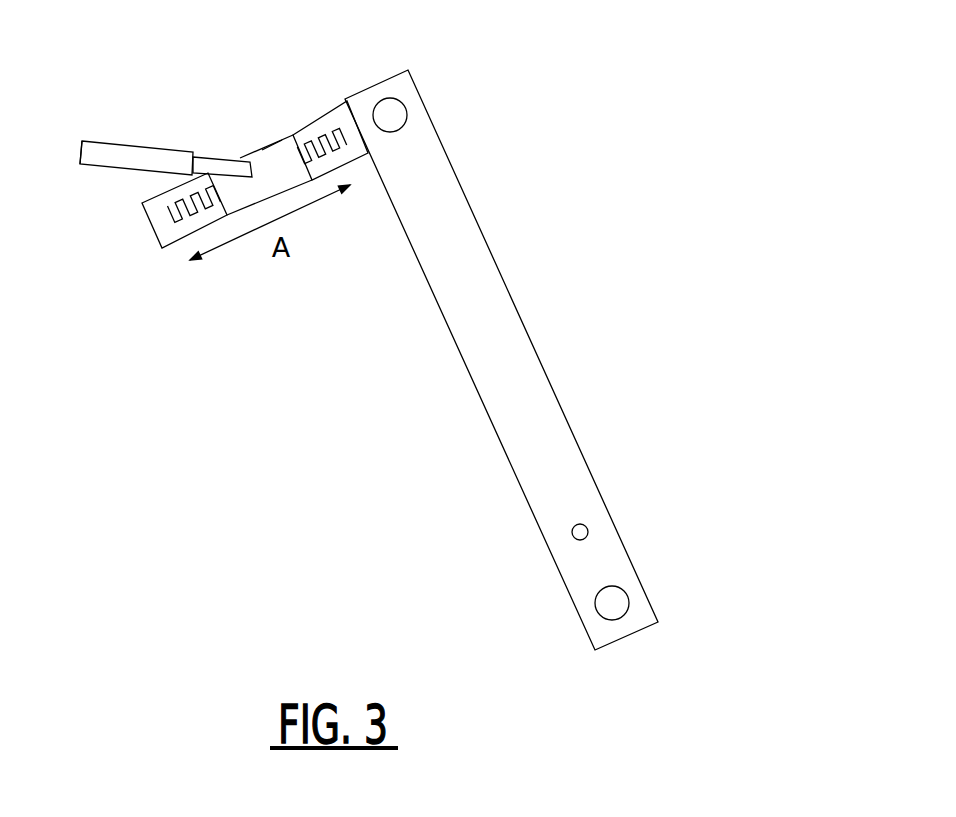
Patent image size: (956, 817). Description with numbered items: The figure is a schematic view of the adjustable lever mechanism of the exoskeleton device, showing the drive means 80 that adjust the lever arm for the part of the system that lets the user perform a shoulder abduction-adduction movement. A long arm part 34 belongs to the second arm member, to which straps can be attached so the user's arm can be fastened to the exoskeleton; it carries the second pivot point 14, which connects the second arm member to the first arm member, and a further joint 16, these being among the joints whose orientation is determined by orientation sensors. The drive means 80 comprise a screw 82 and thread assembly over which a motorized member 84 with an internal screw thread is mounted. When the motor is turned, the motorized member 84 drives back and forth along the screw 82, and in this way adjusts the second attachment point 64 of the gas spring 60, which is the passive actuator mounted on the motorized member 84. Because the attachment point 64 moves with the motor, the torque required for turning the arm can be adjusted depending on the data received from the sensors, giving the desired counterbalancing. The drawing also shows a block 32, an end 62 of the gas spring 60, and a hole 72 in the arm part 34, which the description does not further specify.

The second pivot point 14 is at (396, 117).
The joint 16 is at (615, 603).
The spring-loaded retainer block 32 is at (313, 127).
The arm part 34 is at (472, 250).
The gas spring 60 is at (150, 137).
The handle end 62 is at (99, 158).
The second attachment point 64 is at (240, 158).
The hole 72 is at (582, 530).
The drive means 80 is at (205, 137).
The screw 82 is at (150, 210).
The motorized member 84 is at (270, 158).